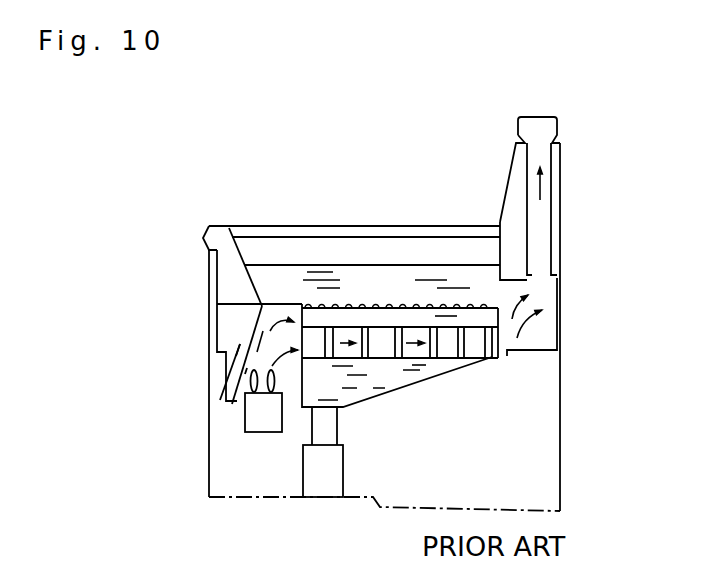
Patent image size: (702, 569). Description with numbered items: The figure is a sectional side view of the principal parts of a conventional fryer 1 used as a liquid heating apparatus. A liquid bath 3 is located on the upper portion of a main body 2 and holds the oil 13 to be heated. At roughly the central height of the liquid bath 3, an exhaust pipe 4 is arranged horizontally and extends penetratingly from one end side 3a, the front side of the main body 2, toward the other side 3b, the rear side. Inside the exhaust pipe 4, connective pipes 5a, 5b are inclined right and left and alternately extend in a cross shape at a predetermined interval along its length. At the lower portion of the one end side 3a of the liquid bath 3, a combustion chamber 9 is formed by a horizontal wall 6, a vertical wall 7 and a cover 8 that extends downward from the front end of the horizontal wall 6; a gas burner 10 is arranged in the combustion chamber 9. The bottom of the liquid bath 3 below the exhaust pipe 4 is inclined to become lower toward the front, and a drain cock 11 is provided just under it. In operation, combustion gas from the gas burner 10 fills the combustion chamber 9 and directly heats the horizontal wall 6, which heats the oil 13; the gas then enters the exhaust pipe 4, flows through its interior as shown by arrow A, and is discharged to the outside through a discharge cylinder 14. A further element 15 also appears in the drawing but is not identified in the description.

The fryer 1 is at (208, 198).
The main body 2 is at (561, 371).
The liquid bath 3 is at (247, 250).
The one end side of liquid bath 3a is at (250, 275).
The other side of liquid bath 3b is at (500, 287).
The exhaust pipe 4 is at (390, 372).
The connective pipe 5a is at (324, 336).
The connective pipe 5b is at (362, 336).
The horizontal wall 6 is at (262, 305).
The vertical wall 7 is at (299, 406).
The cover 8 is at (240, 343).
The combustion chamber 9 is at (247, 368).
The gas burner 10 is at (245, 418).
The drain cock 11 is at (333, 490).
The oil 13 is at (428, 272).
The discharge cylinder 14 is at (555, 222).
The heating element plate 15 is at (410, 304).
The arrow A is at (418, 348).